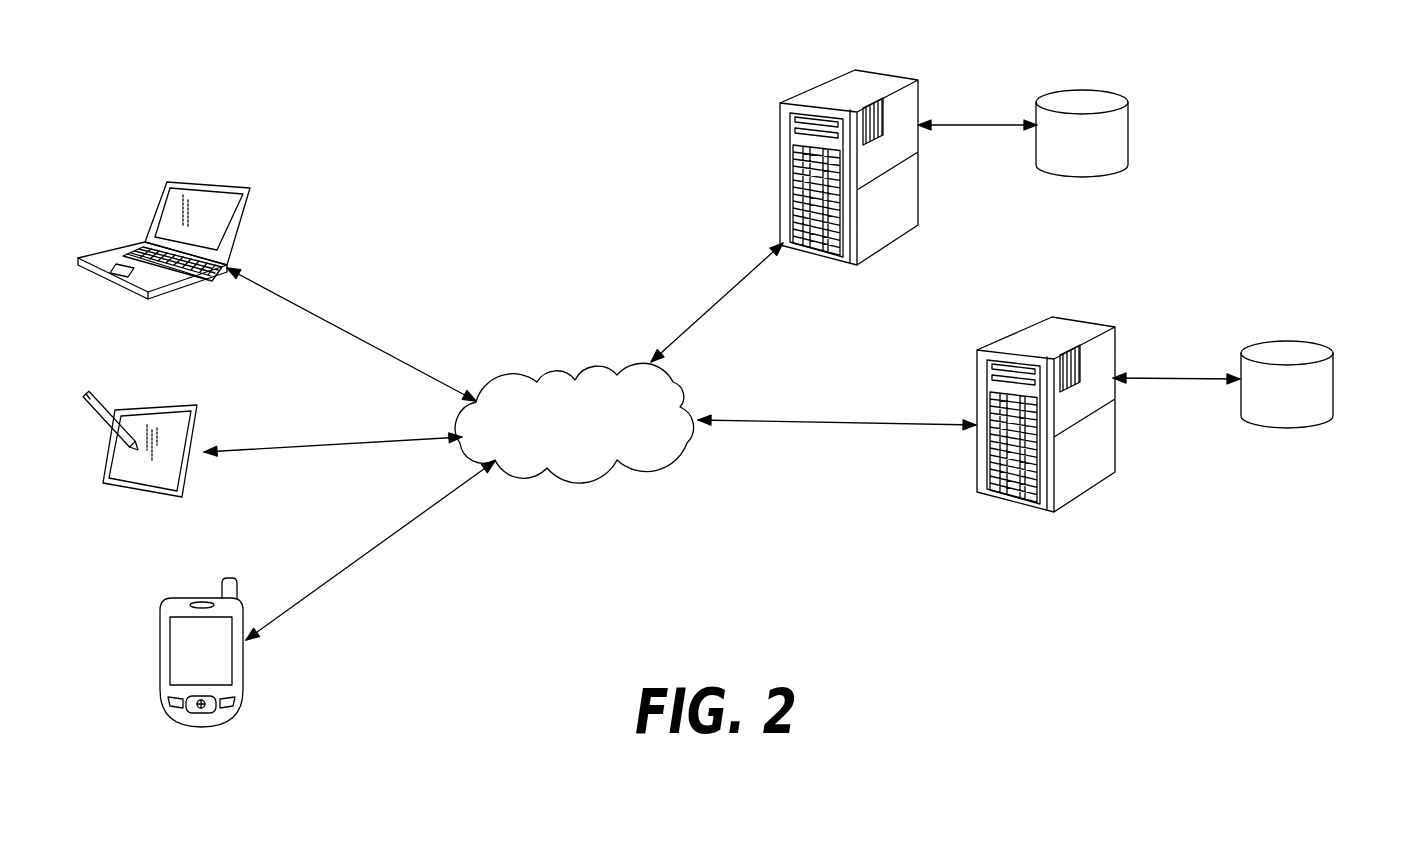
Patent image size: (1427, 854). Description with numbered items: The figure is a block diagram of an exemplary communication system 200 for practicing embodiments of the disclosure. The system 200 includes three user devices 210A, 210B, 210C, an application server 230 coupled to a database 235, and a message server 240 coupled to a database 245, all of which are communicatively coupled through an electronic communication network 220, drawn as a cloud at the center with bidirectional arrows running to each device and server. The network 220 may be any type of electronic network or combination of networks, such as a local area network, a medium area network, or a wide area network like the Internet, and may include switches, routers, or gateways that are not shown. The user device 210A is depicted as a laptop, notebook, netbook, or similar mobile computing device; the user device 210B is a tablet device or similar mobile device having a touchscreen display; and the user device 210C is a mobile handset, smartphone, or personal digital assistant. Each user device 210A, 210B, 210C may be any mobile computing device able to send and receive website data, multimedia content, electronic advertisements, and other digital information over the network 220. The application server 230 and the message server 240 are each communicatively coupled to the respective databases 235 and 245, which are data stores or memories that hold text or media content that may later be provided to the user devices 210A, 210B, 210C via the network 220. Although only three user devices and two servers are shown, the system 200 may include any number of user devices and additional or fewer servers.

The communication system 200 is at (1310, 95).
The user device 210A is at (247, 186).
The user device 210B is at (197, 407).
The user device 210C is at (243, 660).
The electronic communication network 220 is at (553, 368).
The application server 230 is at (918, 193).
The database 235 is at (1128, 140).
The message server 240 is at (1113, 450).
The database 245 is at (1333, 397).